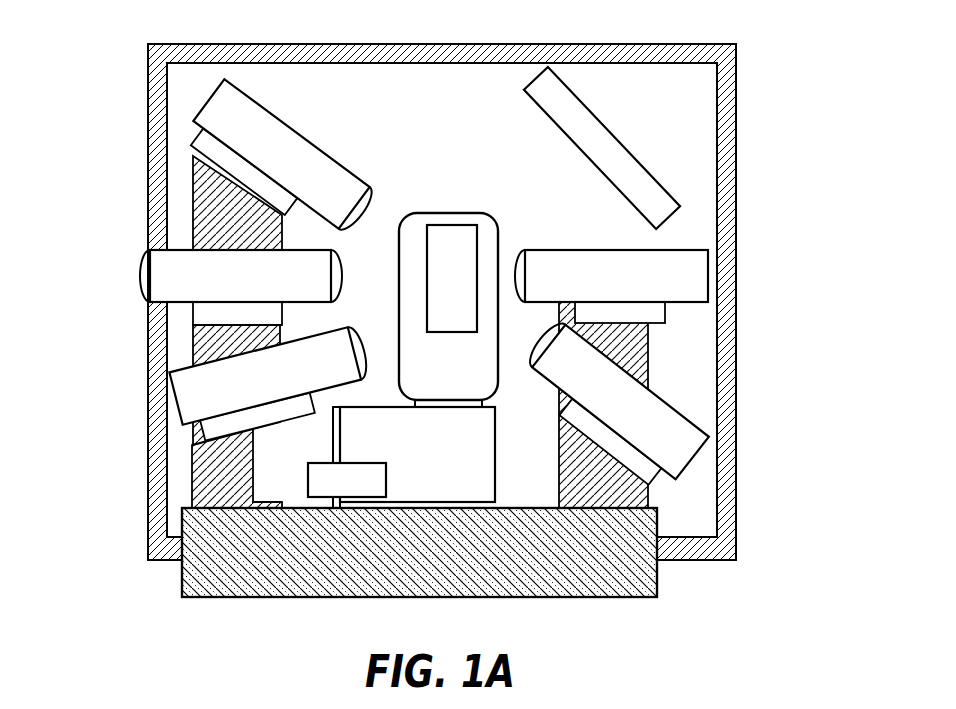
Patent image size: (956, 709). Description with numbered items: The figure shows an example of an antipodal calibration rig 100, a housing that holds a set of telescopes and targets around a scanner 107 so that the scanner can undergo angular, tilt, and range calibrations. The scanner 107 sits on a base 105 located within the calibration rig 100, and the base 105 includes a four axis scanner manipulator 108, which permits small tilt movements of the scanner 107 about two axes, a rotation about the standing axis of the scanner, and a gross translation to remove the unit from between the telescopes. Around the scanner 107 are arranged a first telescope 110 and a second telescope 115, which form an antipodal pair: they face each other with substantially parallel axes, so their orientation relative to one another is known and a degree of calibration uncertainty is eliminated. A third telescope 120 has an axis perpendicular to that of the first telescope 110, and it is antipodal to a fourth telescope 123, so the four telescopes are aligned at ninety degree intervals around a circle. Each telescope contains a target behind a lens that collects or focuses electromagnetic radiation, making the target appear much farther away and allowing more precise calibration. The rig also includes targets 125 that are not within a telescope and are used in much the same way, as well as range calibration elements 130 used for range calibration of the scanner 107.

The antipodal calibration rig 100 is at (735, 190).
The base 105 is at (535, 573).
The scanner 107 is at (450, 211).
The four axis scanner manipulator 108 is at (268, 457).
The first telescope 110 is at (225, 110).
The second telescope 115 is at (653, 428).
The third telescope 120 is at (202, 393).
The fourth telescope 123 is at (665, 275).
The targets 125 is at (608, 145).
The range calibration elements 130 is at (183, 262).